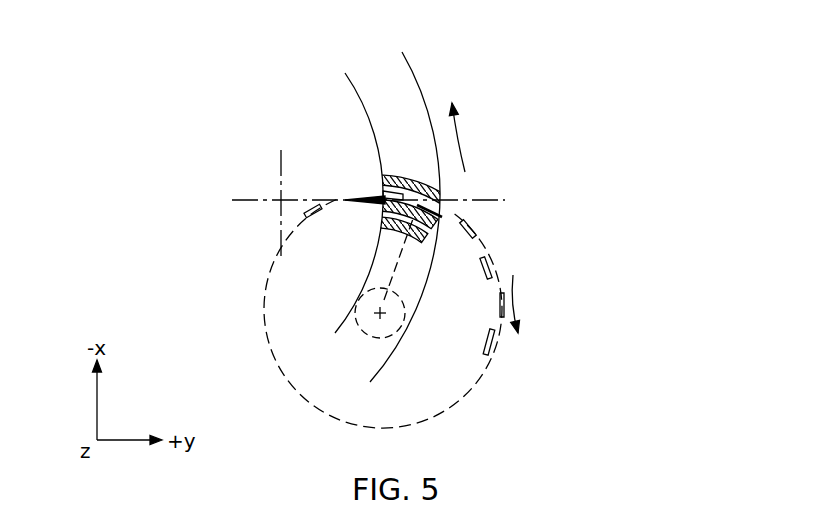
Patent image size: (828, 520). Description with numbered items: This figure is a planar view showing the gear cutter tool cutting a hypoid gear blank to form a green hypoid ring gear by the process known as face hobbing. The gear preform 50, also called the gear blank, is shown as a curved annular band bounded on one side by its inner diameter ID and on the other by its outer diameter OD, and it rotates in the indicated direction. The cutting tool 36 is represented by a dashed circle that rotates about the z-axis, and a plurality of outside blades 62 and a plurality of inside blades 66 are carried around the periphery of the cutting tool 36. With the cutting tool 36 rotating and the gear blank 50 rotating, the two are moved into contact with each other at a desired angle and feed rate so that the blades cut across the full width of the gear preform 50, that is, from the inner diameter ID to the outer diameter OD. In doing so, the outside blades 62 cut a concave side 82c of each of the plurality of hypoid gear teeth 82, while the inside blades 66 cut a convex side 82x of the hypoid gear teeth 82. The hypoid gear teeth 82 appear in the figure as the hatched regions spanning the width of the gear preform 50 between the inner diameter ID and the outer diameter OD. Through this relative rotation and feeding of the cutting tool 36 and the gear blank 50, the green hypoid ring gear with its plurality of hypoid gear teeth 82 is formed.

The gear preform 50 is at (420, 75).
The outer diameter OD is at (427, 100).
The inner diameter ID is at (375, 146).
The hypoid gear teeth 82 is at (384, 222).
The convex side 82x is at (440, 193).
The concave side 82c is at (432, 250).
The cutting tool 36 is at (425, 407).
The outside blades 62 is at (476, 230).
The inside blades 66 is at (489, 268).